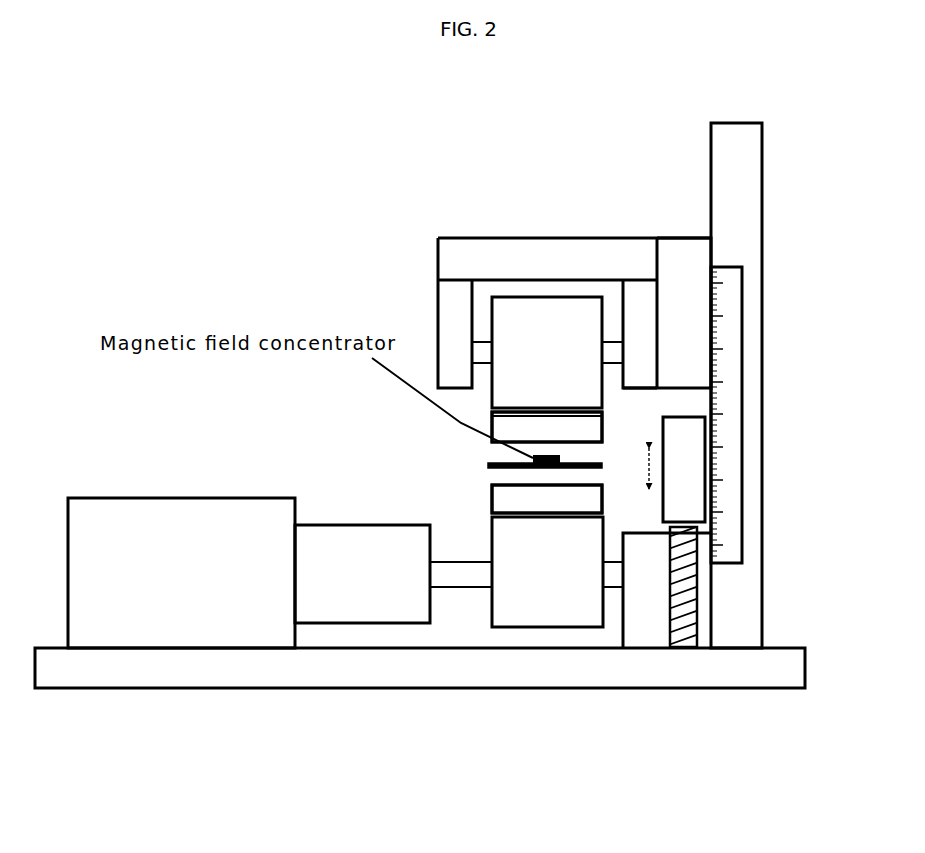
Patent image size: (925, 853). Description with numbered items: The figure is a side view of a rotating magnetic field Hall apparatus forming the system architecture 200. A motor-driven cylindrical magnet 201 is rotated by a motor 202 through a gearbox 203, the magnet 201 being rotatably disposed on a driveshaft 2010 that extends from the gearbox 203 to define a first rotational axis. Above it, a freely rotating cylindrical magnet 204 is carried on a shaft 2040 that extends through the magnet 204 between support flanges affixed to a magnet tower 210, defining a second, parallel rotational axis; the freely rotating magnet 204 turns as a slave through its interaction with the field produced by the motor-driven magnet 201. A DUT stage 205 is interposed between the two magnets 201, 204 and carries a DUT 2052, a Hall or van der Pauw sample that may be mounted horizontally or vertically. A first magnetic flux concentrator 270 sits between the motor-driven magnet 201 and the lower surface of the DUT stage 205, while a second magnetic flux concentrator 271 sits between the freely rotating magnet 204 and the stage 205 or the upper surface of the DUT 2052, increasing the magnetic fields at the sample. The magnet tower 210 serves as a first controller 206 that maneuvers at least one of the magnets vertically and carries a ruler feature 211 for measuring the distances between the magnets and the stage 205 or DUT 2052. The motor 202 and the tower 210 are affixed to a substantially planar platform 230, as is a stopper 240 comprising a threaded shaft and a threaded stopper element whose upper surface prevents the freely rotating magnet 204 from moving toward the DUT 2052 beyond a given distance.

The system architecture 200 is at (440, 227).
The shaft 2040 is at (615, 350).
The magnet tower 210 is at (683, 255).
The freely rotating magnet 204 is at (523, 330).
The DUT 2052 is at (530, 460).
The DUT stage 205 is at (527, 461).
The motor-driven magnet 201 is at (503, 542).
The motor 202 is at (181, 573).
The gearbox 203 is at (362, 574).
The platform 230 is at (93, 680).
The driveshaft 2010 is at (455, 575).
The first magnetic flux concentrator 270 is at (560, 498).
The second magnetic flux concentrator 271 is at (578, 428).
The first controller 206 is at (750, 305).
The ruler feature 211 is at (732, 378).
The stopper 240 is at (688, 445).